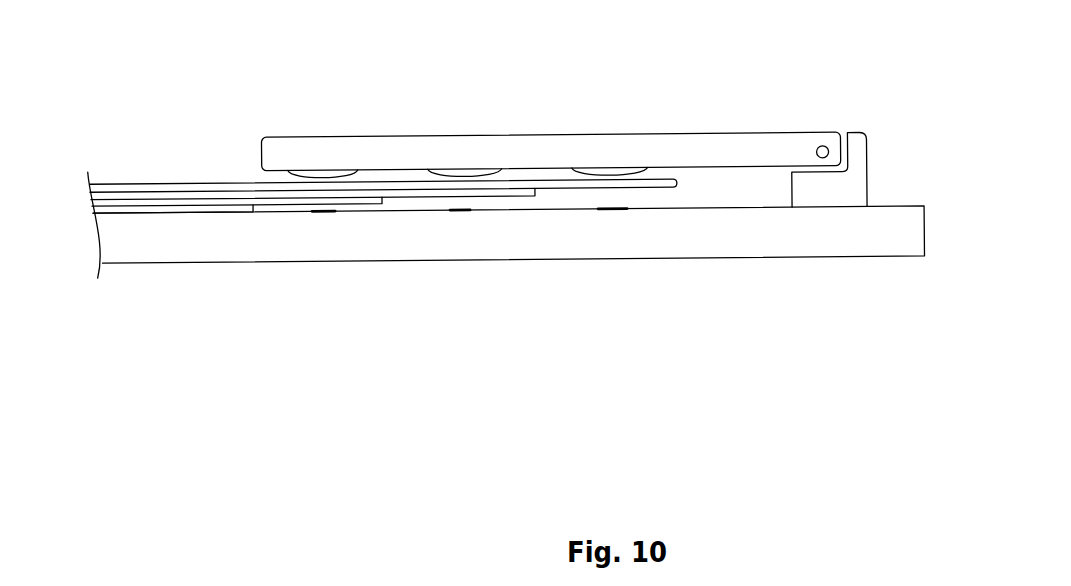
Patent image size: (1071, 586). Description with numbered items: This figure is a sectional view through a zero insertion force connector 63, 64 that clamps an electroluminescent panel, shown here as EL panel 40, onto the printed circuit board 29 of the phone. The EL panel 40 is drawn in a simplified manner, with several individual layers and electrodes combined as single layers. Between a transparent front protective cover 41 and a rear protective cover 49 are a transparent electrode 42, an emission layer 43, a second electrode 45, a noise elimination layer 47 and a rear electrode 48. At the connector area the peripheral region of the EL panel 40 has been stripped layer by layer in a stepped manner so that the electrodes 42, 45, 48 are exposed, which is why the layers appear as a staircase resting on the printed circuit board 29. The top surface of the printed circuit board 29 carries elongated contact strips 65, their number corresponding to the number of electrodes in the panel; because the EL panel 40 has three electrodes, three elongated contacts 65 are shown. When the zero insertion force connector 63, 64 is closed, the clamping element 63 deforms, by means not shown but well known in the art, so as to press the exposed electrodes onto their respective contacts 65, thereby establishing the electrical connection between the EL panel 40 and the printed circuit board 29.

The printed circuit board 29 is at (590, 244).
The EL panel 40 is at (357, 150).
The transparent front protective cover 41 is at (383, 143).
The transparent electrode 42 is at (209, 183).
The emission layer 43 is at (312, 128).
The second electrode 45 is at (177, 190).
The noise elimination layer 47 is at (236, 115).
The rear electrode 48 is at (157, 200).
The rear protective cover 49 is at (103, 206).
The clamping element 63 is at (486, 147).
The zero insertion force connector 64 is at (853, 186).
The elongated contact strips 65 is at (600, 210).